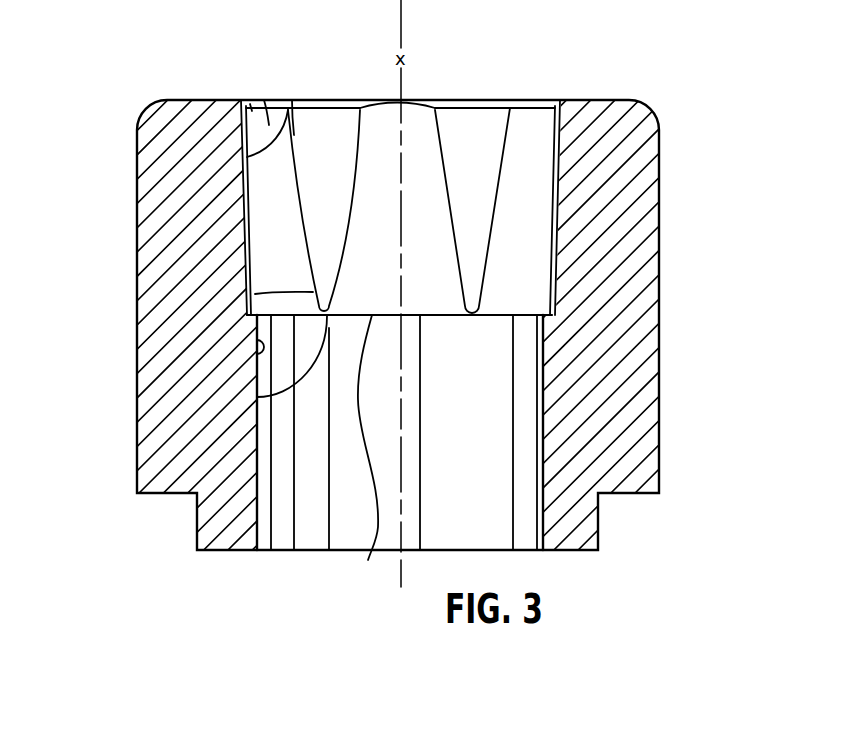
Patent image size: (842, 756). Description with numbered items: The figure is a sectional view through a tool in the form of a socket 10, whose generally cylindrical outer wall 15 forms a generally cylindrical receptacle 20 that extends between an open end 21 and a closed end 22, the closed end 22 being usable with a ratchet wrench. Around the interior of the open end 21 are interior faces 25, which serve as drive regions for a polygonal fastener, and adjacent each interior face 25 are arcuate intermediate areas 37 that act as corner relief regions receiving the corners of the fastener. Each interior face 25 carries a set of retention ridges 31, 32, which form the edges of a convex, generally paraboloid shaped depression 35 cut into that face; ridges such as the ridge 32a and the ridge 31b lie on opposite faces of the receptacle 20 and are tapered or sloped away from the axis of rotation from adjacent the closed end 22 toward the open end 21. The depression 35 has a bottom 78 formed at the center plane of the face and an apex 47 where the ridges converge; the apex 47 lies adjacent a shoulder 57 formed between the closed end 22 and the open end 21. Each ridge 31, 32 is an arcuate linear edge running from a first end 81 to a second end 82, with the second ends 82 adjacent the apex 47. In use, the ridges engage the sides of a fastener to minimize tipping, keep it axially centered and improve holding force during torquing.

The socket 10 is at (670, 143).
The outer wall 15 is at (659, 223).
The receptacle 20 is at (257, 350).
The open end 21 is at (471, 80).
The closed end 22 is at (255, 562).
The interior face 25 is at (250, 104).
The retention ridge 31 is at (302, 229).
The retention ridge 31b is at (555, 158).
The retention ridge 32 is at (348, 139).
The retention ridge 32a is at (264, 100).
The depression 35 is at (318, 180).
The intermediate area 37 is at (241, 100).
The apex 47 is at (257, 397).
The shoulder 57 is at (368, 560).
The bottom 78 is at (247, 157).
The first end 81 is at (292, 100).
The second end 82 is at (255, 294).